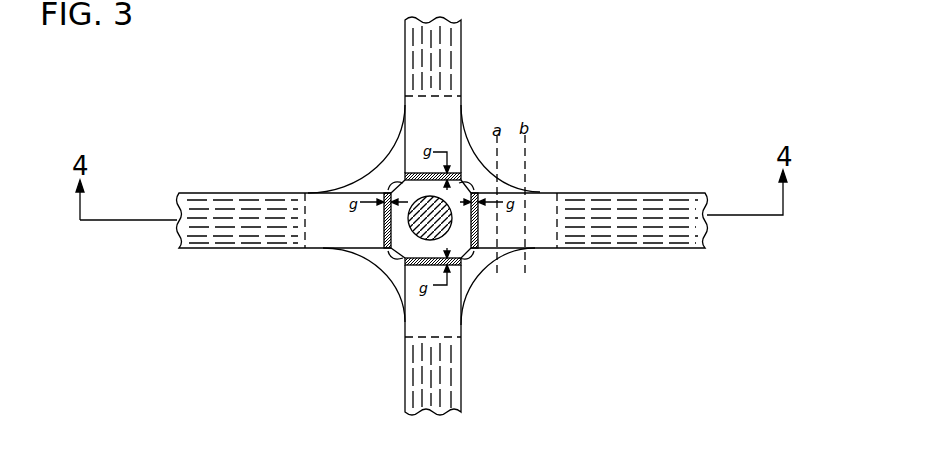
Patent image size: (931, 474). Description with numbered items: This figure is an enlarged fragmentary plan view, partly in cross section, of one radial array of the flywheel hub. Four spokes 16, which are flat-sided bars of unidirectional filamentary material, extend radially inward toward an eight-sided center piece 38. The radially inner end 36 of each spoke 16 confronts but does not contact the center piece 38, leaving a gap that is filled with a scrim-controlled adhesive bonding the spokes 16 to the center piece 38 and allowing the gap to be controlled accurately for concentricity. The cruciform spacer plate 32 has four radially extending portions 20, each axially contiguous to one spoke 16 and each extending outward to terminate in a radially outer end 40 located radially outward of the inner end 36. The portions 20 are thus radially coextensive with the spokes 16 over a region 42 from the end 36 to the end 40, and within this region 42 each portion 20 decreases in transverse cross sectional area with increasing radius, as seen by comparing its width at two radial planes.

The spoke 16 is at (453, 46).
The radially extending portion 20 is at (464, 120).
The spacer plate 32 is at (468, 300).
The radially inner end 36 is at (403, 188).
The center piece 38 is at (385, 192).
The radially outer end 40 is at (427, 88).
The region 42 is at (420, 107).